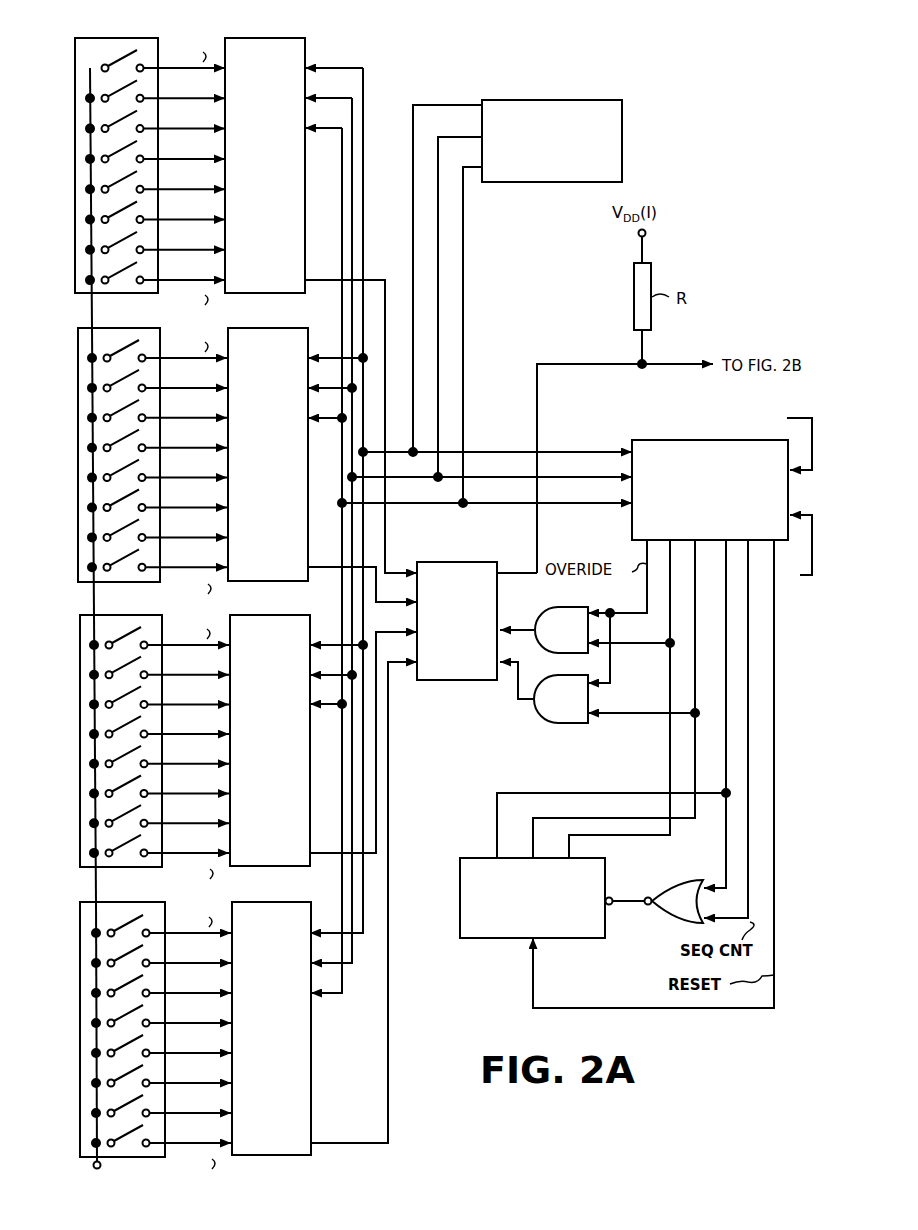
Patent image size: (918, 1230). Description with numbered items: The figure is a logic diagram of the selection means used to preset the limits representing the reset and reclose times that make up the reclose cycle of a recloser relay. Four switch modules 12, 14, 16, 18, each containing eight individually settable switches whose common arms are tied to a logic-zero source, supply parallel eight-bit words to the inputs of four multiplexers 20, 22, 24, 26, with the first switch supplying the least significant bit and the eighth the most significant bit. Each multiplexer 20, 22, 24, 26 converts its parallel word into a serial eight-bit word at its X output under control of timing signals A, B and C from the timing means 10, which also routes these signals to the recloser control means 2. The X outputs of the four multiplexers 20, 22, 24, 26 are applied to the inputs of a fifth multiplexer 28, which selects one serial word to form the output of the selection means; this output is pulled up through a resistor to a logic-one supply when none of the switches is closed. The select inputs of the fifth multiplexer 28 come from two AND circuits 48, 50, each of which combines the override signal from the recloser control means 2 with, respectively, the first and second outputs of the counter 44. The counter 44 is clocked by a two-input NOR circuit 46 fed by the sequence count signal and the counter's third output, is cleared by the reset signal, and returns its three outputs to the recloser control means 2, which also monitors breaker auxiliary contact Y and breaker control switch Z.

The recloser control means 2 is at (742, 440).
The timing means 10 is at (590, 100).
The switch module 12 is at (122, 38).
The switch module 14 is at (98, 325).
The switch module 16 is at (100, 612).
The switch module 18 is at (100, 900).
The multiplexer MUX-1 20 is at (270, 38).
The multiplexer MUX-2 22 is at (284, 306).
The multiplexer MUX-3 24 is at (286, 593).
The multiplexer MUX-4 26 is at (286, 881).
The multiplexer MUX-5 28 is at (480, 562).
The Counter (1) 44 is at (472, 858).
The NOR circuit 46 is at (666, 880).
The AND circuit 48 is at (544, 630).
The AND circuit 50 is at (544, 692).